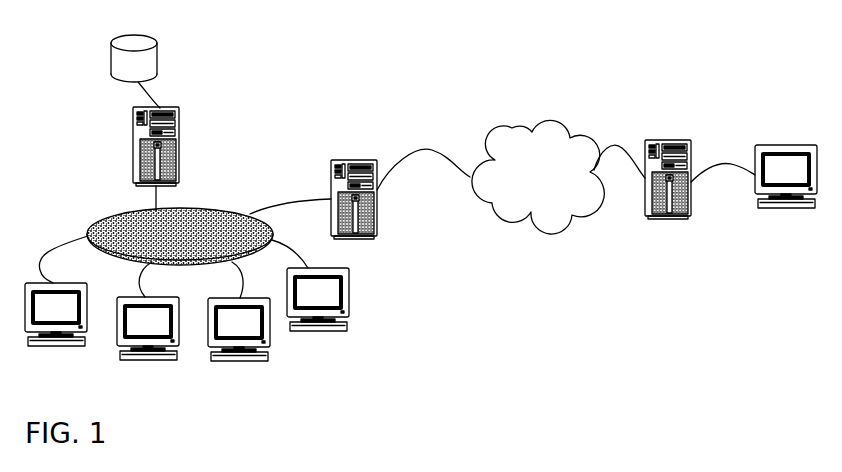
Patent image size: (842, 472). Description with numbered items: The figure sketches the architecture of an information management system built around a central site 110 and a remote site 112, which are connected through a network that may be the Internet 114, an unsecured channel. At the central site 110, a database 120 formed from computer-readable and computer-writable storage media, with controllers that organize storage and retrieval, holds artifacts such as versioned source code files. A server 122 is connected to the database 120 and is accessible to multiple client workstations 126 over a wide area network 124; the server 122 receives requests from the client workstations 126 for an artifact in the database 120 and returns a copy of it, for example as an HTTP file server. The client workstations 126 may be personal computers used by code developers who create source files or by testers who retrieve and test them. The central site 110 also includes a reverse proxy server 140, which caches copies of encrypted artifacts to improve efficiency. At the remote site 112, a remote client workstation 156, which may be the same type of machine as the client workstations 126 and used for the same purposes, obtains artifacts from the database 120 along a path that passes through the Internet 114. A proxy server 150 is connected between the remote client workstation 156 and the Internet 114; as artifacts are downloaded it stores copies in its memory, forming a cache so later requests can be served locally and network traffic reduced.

The central site 110 is at (336, 106).
The remote site 112 is at (632, 103).
The Internet 114 is at (550, 130).
The database 120 is at (158, 60).
The server 122 is at (180, 146).
The wide area network 124 is at (193, 243).
The client workstations 126 is at (197, 316).
The reverse proxy server 140 is at (377, 228).
The proxy server 150 is at (670, 220).
The remote client workstation 156 is at (787, 210).